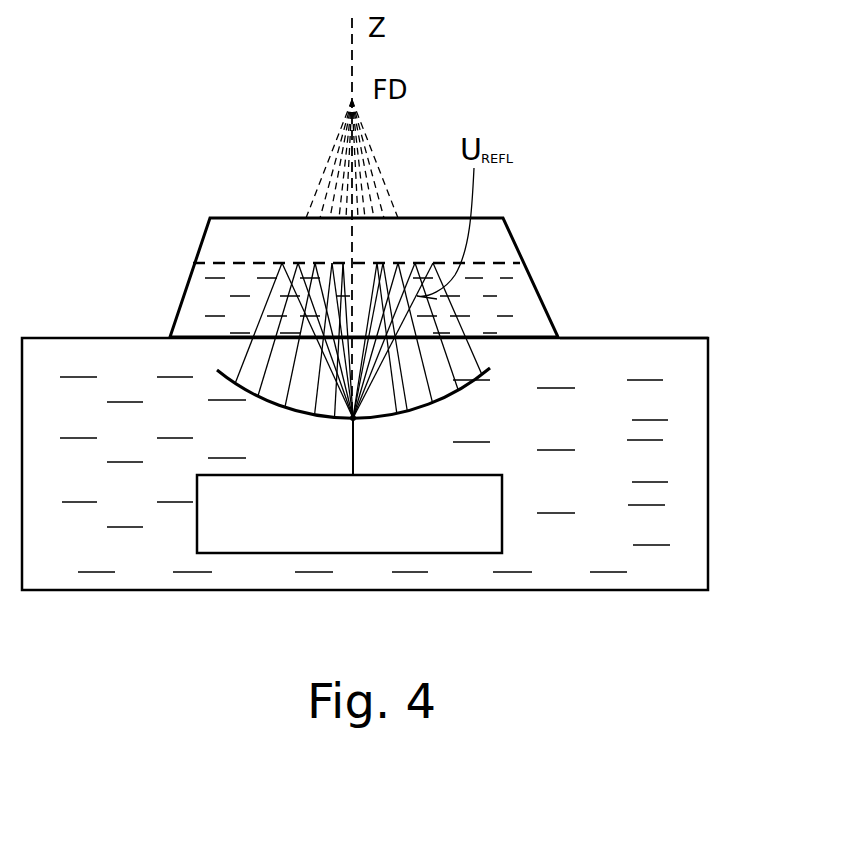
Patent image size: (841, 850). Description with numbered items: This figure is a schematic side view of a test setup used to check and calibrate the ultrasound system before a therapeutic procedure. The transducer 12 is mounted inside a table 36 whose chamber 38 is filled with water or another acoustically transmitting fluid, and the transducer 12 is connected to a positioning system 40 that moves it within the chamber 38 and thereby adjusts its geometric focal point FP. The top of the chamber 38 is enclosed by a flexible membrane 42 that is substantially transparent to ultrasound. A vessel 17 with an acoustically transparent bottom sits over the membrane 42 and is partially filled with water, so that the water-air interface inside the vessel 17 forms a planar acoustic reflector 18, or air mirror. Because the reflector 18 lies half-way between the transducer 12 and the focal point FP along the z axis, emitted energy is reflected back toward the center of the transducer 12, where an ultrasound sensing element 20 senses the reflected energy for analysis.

The transducer 12 is at (265, 402).
The vessel 17 is at (195, 292).
The acoustic reflector 18 is at (498, 258).
The ultrasound sensing element 20 is at (358, 422).
The table 36 is at (720, 460).
The chamber 38 is at (52, 419).
The positioning system 40 is at (457, 555).
The flexible membrane 42 is at (676, 338).